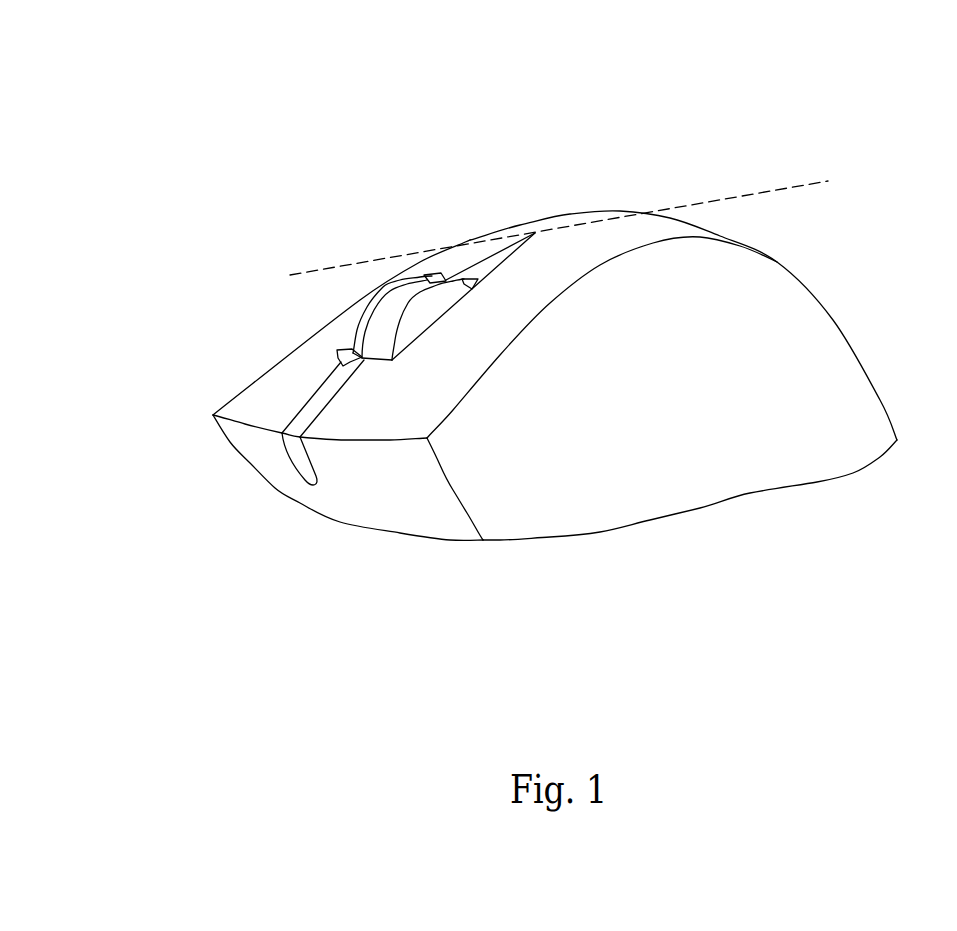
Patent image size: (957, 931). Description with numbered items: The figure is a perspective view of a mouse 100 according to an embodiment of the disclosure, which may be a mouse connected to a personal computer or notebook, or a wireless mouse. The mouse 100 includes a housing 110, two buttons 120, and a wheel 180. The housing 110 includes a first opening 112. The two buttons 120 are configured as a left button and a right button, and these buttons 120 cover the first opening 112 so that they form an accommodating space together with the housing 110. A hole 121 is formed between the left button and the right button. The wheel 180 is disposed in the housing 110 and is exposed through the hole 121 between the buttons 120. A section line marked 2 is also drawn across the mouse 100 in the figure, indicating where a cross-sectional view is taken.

The mouse 100 is at (178, 86).
The housing 110 is at (832, 322).
The first opening 112 is at (246, 367).
The button 120 is at (248, 406).
The hole 121 is at (343, 344).
The wheel 180 is at (410, 315).
The section line 2- 2 is at (270, 276).